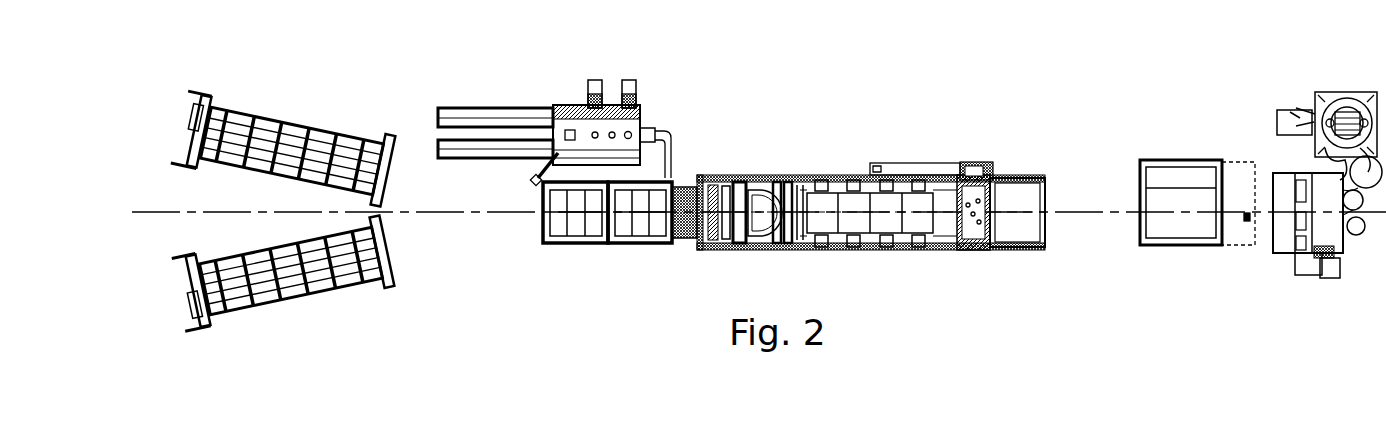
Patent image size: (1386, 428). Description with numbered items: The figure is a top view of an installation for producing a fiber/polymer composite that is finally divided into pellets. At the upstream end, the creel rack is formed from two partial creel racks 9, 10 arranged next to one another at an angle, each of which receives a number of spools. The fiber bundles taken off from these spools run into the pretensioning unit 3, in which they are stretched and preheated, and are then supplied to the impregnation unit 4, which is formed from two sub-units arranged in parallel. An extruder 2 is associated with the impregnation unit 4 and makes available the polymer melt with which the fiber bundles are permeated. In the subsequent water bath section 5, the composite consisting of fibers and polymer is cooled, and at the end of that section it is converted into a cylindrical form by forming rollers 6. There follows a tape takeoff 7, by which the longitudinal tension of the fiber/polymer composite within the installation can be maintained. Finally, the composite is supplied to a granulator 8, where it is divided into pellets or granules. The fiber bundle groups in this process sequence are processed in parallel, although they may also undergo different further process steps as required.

The extruder 2 is at (460, 120).
The pretensioning unit 3 is at (567, 212).
The impregnation unit 4 is at (683, 240).
The water bath section 5 is at (832, 175).
The forming rollers 6 is at (977, 163).
The tape takeoff 7 is at (1188, 185).
The granulator 8 is at (1340, 110).
The partial creel rack 9 is at (232, 117).
The partial creel rack 10 is at (277, 293).